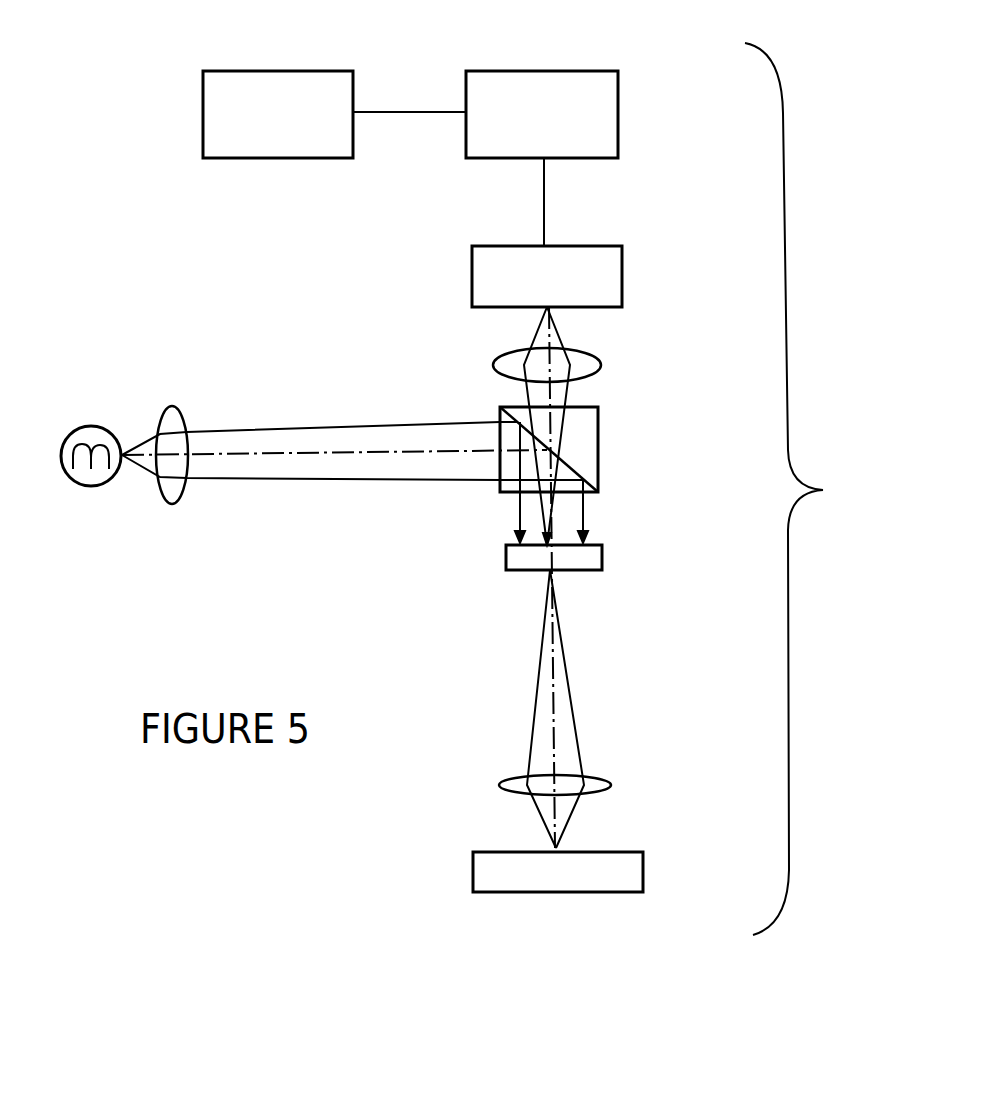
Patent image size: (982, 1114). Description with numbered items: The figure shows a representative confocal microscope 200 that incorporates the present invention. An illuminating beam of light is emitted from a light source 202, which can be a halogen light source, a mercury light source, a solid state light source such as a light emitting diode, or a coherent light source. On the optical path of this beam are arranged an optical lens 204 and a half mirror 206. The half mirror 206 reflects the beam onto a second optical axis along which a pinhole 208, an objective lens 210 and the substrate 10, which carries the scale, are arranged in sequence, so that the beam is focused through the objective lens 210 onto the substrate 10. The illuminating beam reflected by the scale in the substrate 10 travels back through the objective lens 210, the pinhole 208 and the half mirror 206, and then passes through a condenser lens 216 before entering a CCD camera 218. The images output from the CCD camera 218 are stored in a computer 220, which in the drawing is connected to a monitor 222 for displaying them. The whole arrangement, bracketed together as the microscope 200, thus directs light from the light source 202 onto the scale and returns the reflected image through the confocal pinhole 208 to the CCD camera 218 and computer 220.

The substrate 10 is at (500, 893).
The confocal microscope 200 is at (814, 489).
The light source 202 is at (93, 425).
The optical lens 204 is at (170, 405).
The half mirror 206 is at (600, 428).
The pinhole 208 is at (603, 553).
The objective lens 210 is at (593, 774).
The condenser lens 216 is at (503, 356).
The CCD camera 218 is at (603, 244).
The computer 220 is at (598, 66).
The monitor 222 is at (279, 70).